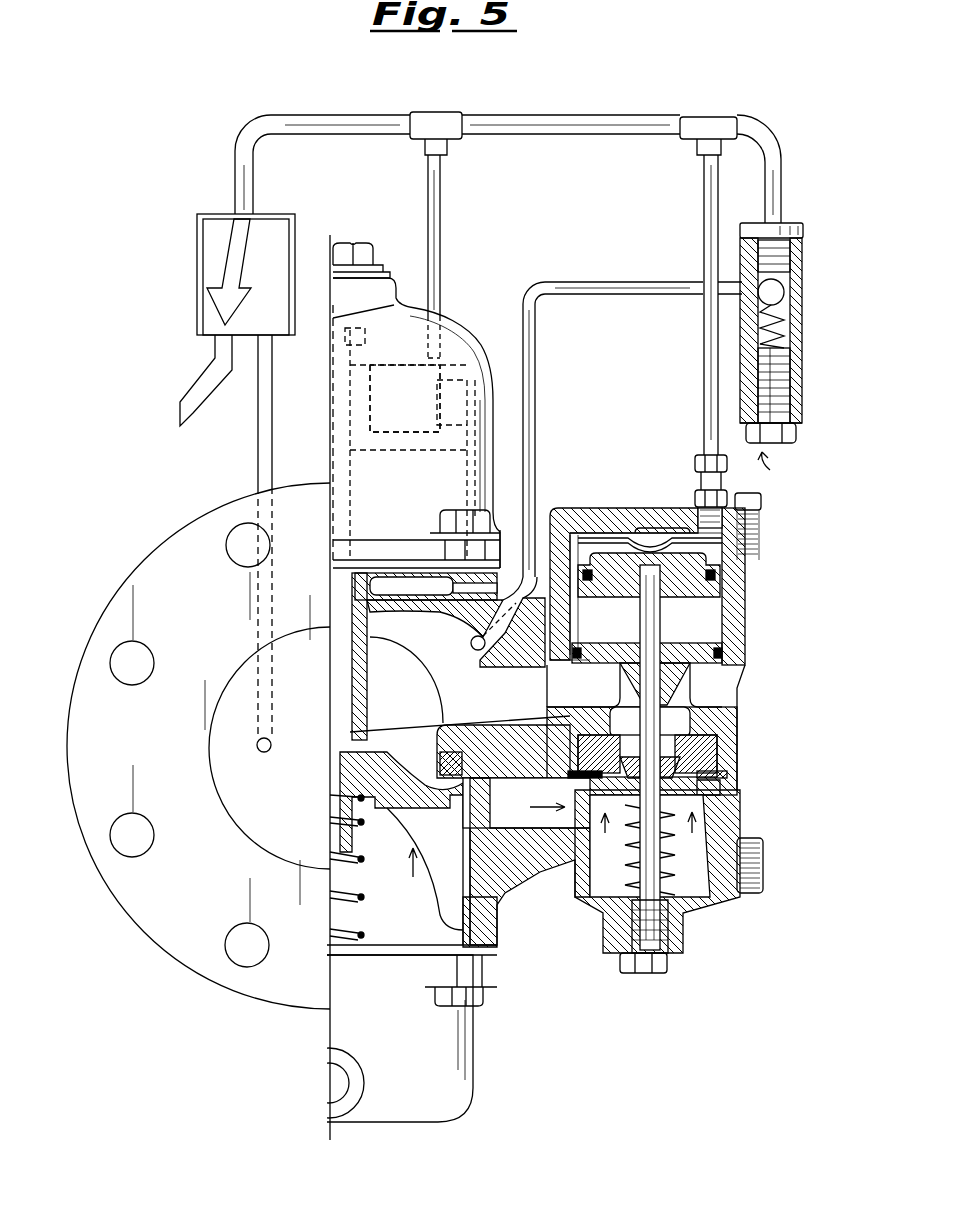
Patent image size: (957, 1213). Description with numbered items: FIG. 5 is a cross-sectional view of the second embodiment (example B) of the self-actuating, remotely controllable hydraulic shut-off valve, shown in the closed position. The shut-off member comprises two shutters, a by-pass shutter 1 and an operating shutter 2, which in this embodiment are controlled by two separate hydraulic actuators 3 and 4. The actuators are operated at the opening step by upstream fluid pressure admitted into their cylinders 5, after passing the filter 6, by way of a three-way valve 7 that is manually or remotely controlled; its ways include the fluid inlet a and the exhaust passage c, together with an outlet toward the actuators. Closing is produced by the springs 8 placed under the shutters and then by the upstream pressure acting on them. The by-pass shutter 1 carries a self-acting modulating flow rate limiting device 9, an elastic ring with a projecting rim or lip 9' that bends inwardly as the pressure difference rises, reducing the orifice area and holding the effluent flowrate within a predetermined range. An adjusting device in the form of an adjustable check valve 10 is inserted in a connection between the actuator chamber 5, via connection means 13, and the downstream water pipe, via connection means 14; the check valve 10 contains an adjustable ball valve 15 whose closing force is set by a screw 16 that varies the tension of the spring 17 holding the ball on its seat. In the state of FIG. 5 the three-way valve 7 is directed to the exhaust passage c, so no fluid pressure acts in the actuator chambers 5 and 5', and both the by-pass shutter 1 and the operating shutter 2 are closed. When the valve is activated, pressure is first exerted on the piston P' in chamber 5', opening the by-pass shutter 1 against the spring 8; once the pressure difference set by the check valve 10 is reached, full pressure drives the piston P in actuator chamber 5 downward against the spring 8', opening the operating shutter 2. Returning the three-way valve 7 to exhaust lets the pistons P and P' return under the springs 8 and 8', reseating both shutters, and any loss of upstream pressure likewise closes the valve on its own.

The by-pass shutter 1 is at (712, 806).
The operating shutter 2 is at (355, 765).
The hydraulic actuator 3 is at (745, 645).
The hydraulic actuator 4 is at (481, 315).
The actuator cylinder 5 is at (416, 381).
The actuator chamber 5' is at (650, 505).
The filter 6 is at (244, 182).
The three-way valve 7 is at (205, 268).
The spring 8 is at (643, 881).
The spring 8' is at (307, 920).
The flow rate limiting device 9 is at (674, 739).
The projecting rim 9' is at (704, 775).
The adjustable check valve 10 is at (803, 258).
The connection means 13 is at (708, 378).
The connection means 14 is at (622, 283).
The adjustable ball valve 15 is at (784, 296).
The screw 16 is at (792, 446).
The spring 17 is at (784, 333).
The inlet tube a is at (262, 441).
The exhaust passage c is at (205, 386).
The piston P is at (476, 401).
The piston P' is at (681, 579).